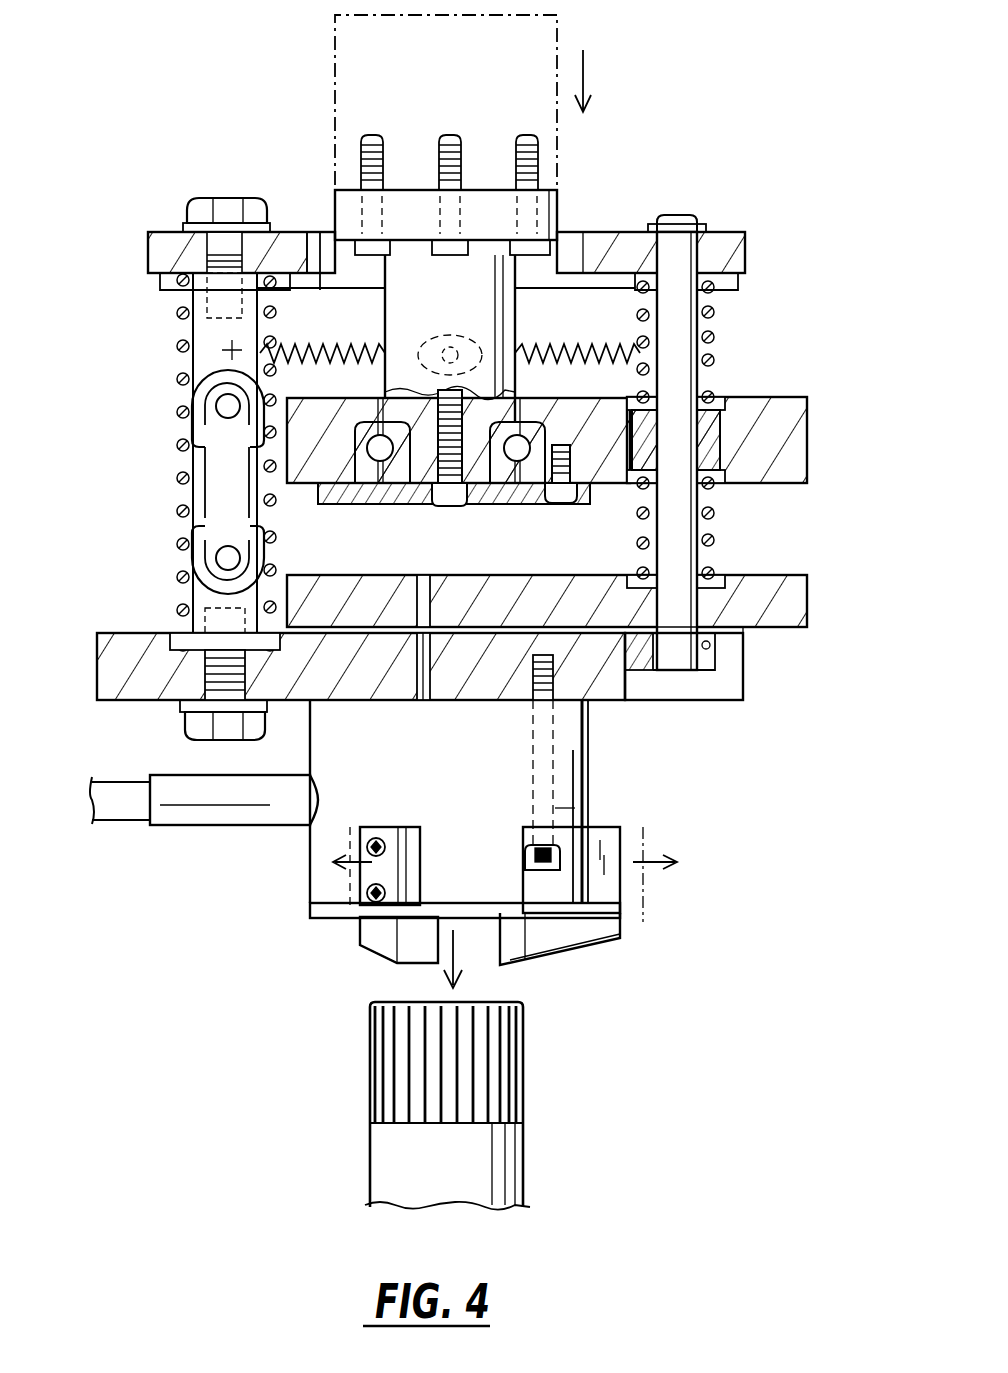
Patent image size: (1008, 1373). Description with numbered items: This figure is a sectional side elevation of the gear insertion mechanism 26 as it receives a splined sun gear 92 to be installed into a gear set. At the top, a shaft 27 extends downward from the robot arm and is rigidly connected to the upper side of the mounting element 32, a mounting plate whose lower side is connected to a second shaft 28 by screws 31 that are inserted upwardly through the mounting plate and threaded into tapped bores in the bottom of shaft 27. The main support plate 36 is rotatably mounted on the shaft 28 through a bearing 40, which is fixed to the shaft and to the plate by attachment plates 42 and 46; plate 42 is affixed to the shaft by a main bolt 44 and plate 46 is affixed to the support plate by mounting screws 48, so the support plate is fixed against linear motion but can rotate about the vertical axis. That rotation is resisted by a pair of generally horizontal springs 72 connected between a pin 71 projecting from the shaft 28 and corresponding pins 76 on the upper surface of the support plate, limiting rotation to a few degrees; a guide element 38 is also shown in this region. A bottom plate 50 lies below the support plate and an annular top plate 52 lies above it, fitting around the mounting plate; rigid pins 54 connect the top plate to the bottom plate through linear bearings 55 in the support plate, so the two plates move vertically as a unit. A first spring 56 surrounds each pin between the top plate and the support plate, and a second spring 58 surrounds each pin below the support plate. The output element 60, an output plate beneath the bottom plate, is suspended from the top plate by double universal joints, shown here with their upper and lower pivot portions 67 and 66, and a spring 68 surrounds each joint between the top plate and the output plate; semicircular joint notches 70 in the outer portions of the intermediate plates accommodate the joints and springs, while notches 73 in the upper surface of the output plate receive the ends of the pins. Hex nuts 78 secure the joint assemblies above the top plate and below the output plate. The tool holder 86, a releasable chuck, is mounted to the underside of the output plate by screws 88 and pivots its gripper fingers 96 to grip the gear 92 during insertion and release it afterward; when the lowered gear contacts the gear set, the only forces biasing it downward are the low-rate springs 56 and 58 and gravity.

The gear insertion mechanism 26 is at (886, 140).
The shaft 27 is at (565, 32).
The shaft 28 is at (396, 300).
The screws 31 is at (552, 250).
The mounting element 32 is at (558, 200).
The main support plate 36 is at (808, 400).
The guide pin 38 is at (520, 400).
The bearing 40 is at (362, 422).
The attachment plate 42 is at (412, 498).
The main bolt 44 is at (450, 507).
The attachment plate 46 is at (347, 498).
The mounting screws 48 is at (560, 503).
The bottom plate 50 is at (808, 582).
The top plate 52 is at (750, 242).
The rigid pins 54 is at (700, 330).
The linear bearings 55 is at (710, 447).
The first spring 56 is at (715, 360).
The second spring 58 is at (714, 542).
The output element 60 is at (100, 633).
The lower pivot 66 is at (222, 560).
The upper pivot 67 is at (222, 407).
The spring 68 is at (178, 306).
The joint notches 70 is at (293, 483).
The pin 71 is at (462, 340).
The springs 72 is at (344, 330).
The notches 73 is at (632, 692).
The pin 76 is at (222, 353).
The hex nut 78 is at (222, 200).
The tool holder 86 is at (308, 866).
The screws 88 is at (590, 811).
The splined sun gear 92 is at (500, 1098).
The gripper fingers 96 is at (356, 937).